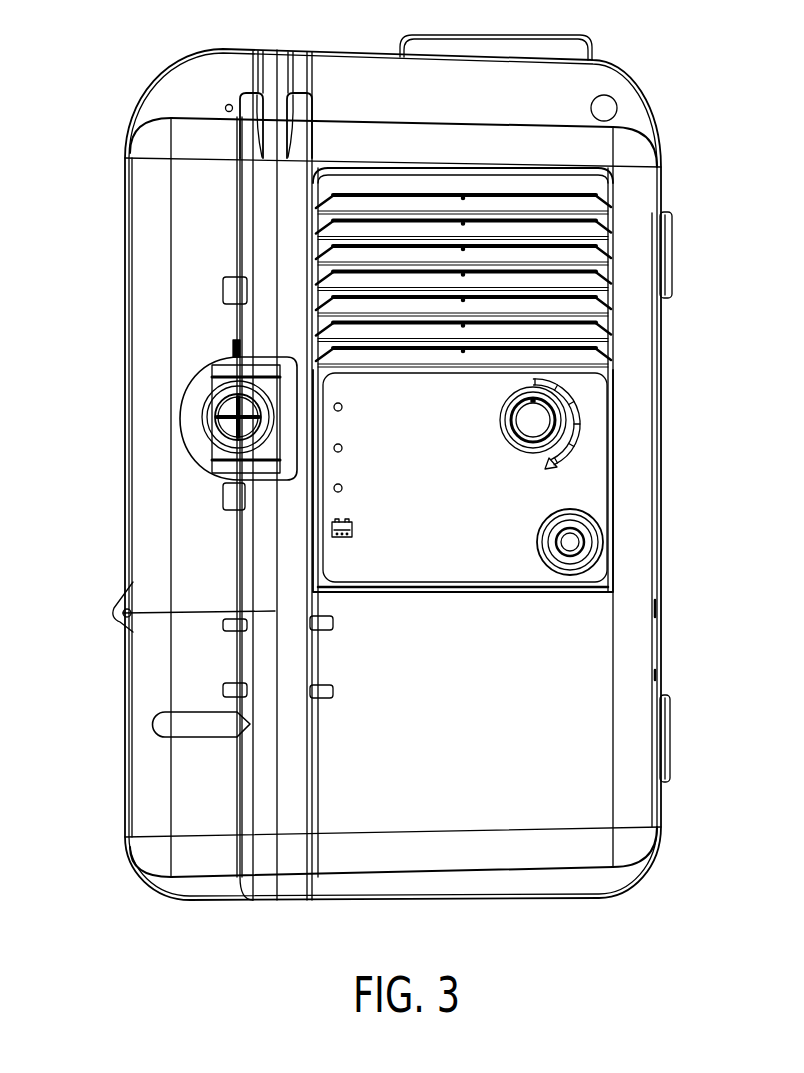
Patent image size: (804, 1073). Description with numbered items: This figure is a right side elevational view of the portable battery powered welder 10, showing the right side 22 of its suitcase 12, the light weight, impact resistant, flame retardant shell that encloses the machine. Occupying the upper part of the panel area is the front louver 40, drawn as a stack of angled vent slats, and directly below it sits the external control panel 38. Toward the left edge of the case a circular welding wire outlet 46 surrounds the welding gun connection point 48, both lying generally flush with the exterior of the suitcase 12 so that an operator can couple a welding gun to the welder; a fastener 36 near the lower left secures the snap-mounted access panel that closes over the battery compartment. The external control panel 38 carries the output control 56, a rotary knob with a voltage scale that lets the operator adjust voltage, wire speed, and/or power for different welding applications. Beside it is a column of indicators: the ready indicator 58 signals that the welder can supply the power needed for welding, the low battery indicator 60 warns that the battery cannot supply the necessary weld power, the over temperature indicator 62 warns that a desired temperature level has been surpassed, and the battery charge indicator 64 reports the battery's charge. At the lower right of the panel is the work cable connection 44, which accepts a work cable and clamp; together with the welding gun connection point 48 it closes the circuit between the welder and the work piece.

The portable battery powered welder 10 is at (661, 66).
The suitcase 12 is at (662, 803).
The right side 22 is at (467, 714).
The fasteners 36 is at (233, 724).
The external control panel 38 is at (592, 452).
The front louver 40 is at (580, 255).
The work cable connection 44 is at (597, 532).
The welding wire outlet 46 is at (178, 418).
The welding gun connection point 48 is at (213, 452).
The output control 56 is at (583, 412).
The ready indicator 58 is at (334, 405).
The low battery indicator 60 is at (335, 451).
The over temperature indicator 62 is at (335, 491).
The battery charge indicator 64 is at (341, 540).